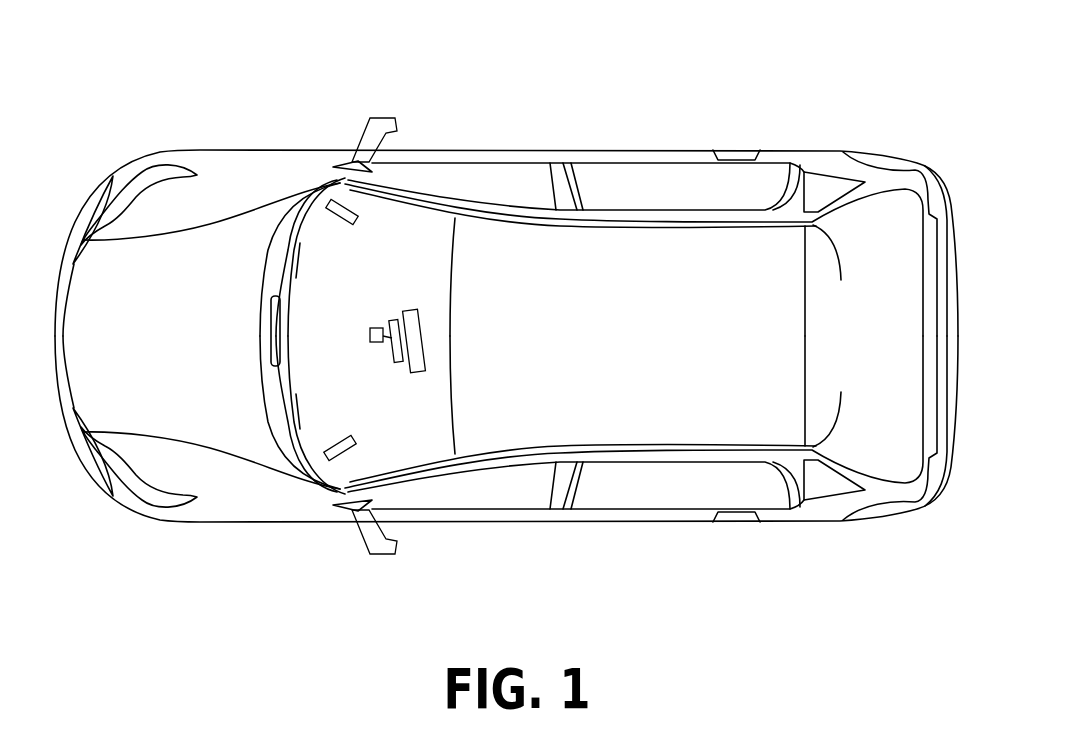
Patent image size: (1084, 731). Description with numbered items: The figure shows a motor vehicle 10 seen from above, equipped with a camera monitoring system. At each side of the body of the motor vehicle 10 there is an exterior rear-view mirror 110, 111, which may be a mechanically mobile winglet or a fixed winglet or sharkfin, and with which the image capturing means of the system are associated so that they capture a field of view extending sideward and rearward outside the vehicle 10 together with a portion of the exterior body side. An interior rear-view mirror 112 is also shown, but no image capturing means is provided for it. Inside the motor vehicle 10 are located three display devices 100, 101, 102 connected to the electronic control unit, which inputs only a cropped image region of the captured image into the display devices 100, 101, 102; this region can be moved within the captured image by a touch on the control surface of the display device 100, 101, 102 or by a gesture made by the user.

The motor vehicle 10 is at (632, 292).
The display device 100 is at (325, 200).
The display device 101 is at (335, 462).
The display device 102 is at (413, 347).
The exterior rear-view mirror 110 is at (378, 125).
The exterior rear-view mirror 111 is at (392, 552).
The interior rear-view mirror 112 is at (389, 340).